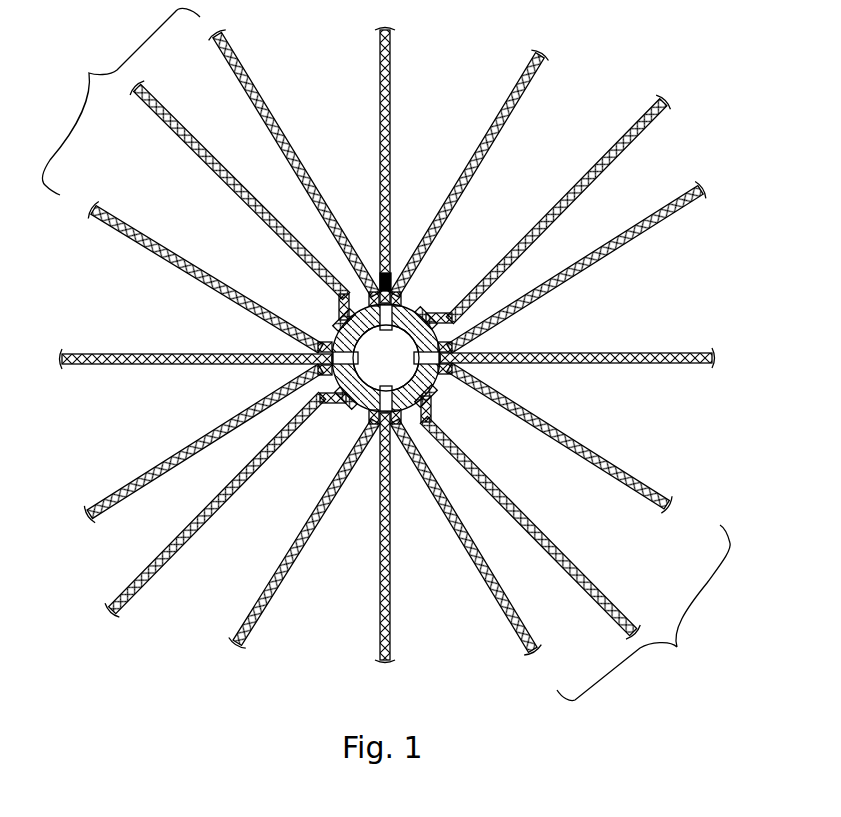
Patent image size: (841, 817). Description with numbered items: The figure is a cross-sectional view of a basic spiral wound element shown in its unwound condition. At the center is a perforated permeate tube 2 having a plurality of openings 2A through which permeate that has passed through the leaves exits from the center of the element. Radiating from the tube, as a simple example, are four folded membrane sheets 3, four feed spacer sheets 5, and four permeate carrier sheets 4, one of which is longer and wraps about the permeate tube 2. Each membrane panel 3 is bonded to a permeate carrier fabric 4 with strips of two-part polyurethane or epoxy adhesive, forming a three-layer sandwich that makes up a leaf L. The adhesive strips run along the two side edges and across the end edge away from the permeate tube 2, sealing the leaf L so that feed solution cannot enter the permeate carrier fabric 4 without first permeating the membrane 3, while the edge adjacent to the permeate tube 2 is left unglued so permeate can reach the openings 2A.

The perforated permeate tube 2 is at (418, 305).
The openings 2A is at (386, 330).
The folded membrane sheet 3 is at (272, 128).
The permeate carrier sheet 4 is at (222, 163).
The feed spacer sheet 5 is at (391, 102).
The leaf L is at (386, 354).